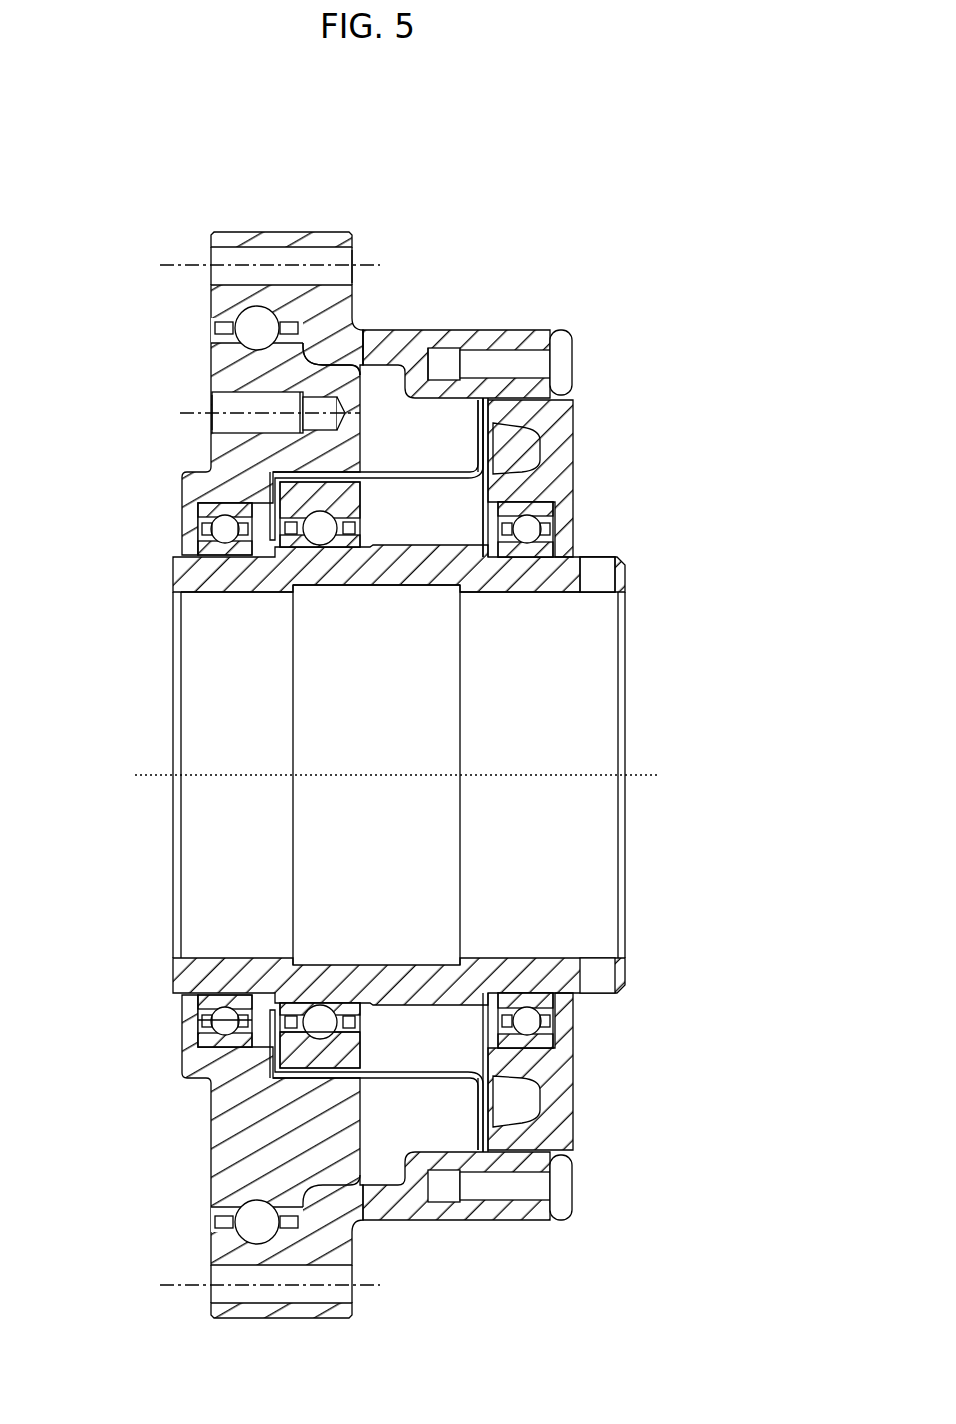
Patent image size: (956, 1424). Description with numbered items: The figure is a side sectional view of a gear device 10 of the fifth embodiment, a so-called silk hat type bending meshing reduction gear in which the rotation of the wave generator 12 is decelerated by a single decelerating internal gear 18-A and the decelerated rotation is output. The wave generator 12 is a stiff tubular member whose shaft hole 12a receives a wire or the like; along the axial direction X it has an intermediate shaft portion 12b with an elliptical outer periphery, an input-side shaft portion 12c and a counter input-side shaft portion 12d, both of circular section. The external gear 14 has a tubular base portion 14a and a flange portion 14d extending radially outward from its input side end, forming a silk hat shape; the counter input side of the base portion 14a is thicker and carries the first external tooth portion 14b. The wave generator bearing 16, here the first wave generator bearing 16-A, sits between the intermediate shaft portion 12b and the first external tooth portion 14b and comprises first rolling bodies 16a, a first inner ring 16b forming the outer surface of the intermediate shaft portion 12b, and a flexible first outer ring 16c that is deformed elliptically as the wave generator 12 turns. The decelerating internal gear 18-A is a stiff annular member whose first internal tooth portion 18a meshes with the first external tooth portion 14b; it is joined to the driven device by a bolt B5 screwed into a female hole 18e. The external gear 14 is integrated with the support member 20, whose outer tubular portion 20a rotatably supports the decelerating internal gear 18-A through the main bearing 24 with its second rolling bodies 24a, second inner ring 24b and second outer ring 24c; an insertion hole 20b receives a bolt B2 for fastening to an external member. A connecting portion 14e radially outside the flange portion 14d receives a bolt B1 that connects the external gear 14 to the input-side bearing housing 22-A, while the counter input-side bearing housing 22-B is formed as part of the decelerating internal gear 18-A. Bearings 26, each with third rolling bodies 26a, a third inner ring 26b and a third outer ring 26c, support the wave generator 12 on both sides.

The gear device 10 is at (655, 236).
The wave generator 12 is at (600, 556).
The shaft hole 12a is at (592, 576).
The intermediate shaft portion 12b is at (350, 565).
The input-side shaft portion 12c is at (510, 575).
The counter input-side shaft portion 12d is at (213, 580).
The external gear 14 is at (445, 459).
The base portion 14a is at (425, 487).
The first external tooth portion 14b is at (298, 460).
The flange portion 14d is at (487, 447).
The connecting portion 14e is at (485, 328).
The wave generator bearing 16 is at (320, 514).
The first wave generator bearing 16-A is at (328, 969).
The first rolling bodies 16a is at (345, 1015).
The first inner ring 16b is at (288, 1018).
The first outer ring 16c is at (318, 992).
The decelerating internal gear 18-A is at (336, 362).
The first internal tooth portion 18a is at (345, 470).
The female hole 18e is at (236, 402).
The support member 20 is at (270, 353).
The outer tubular portion 20a is at (232, 243).
The insertion hole 20b is at (270, 255).
The input-side bearing housing 22-A is at (583, 436).
The counter input-side bearing housing 22-B is at (165, 502).
The main bearing 24 is at (266, 1156).
The second rolling bodies 24a is at (252, 1200).
The second inner ring 24b is at (325, 1205).
The second outer ring 24c is at (258, 1240).
The bearing 26 is at (376, 970).
The third rolling bodies 26a is at (230, 1010).
The third inner ring 26b is at (209, 1008).
The third outer ring 26c is at (197, 1037).
The bolt B1 is at (556, 356).
The bolt B2 is at (363, 265).
The bolt B5 is at (200, 420).
The axial direction X is at (608, 1253).